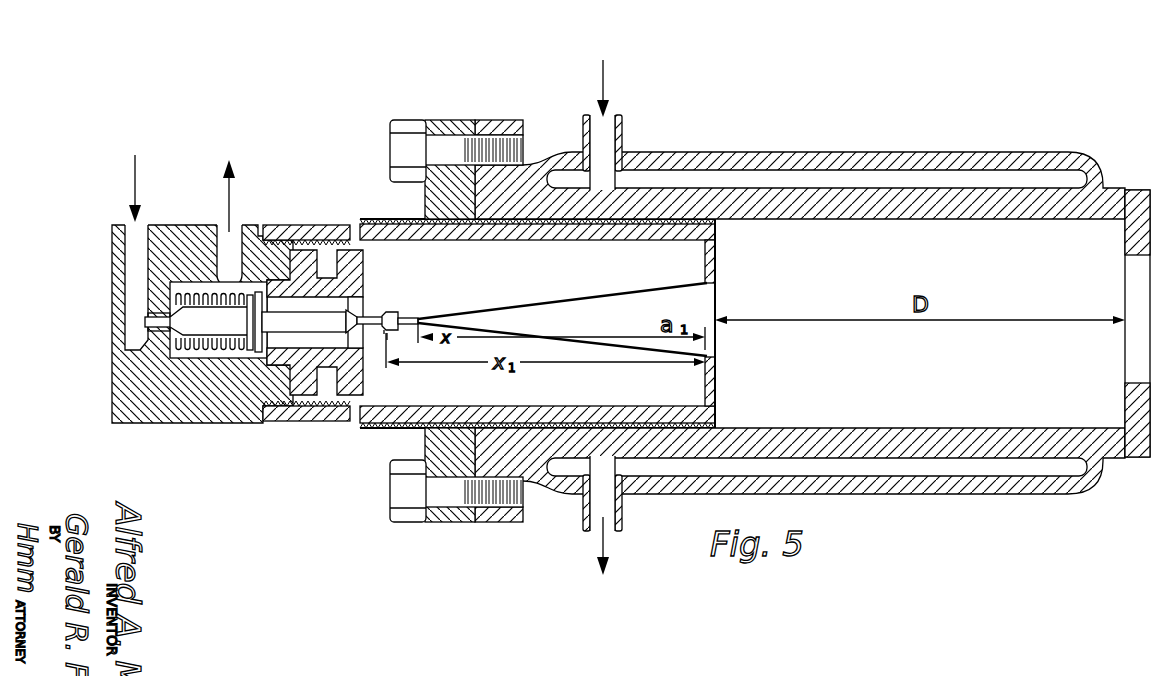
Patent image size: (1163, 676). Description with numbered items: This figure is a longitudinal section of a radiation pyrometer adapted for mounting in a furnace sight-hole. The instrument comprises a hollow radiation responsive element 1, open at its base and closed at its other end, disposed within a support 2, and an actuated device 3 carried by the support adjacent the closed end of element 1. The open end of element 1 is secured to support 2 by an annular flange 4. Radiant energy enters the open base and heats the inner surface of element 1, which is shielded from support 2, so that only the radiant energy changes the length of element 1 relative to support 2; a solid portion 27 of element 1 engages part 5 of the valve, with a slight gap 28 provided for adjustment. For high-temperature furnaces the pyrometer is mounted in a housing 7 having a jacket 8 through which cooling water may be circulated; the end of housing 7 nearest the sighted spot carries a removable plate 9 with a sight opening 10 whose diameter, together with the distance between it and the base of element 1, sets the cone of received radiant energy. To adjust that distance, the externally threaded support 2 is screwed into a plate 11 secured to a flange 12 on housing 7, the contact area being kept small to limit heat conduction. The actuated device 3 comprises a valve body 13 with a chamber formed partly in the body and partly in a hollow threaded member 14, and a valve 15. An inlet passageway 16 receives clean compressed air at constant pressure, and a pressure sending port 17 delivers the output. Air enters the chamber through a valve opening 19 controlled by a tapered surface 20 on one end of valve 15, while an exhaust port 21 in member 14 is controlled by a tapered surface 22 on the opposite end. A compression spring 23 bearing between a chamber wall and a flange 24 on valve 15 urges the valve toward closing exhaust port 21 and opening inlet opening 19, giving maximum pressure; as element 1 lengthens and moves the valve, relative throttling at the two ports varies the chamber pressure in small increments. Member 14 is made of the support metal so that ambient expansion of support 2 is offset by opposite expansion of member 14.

The radiation responsive element 1 is at (582, 297).
The support 2 is at (374, 222).
The actuated device 3 is at (205, 430).
The annular flange 4 is at (716, 388).
The part of the actuated device 5 is at (390, 312).
The housing 7 is at (708, 150).
The jacket 8 is at (885, 173).
The removable plate 9 is at (1134, 190).
The sight opening 10 is at (1128, 284).
The plate 11 is at (425, 446).
The flange 12 is at (513, 522).
The valve body 13 is at (200, 227).
The hollow threaded member 14 is at (322, 314).
The valve 15 is at (340, 306).
The inlet passageway 16 is at (132, 262).
The pressure sending port 17 is at (233, 229).
The valve opening 19 is at (148, 314).
The tapered surface 20 is at (158, 333).
The exhaust port 21 is at (372, 300).
The tapered surface 22 is at (388, 340).
The compression spring 23 is at (173, 330).
The flange 24 is at (257, 352).
The solid portion 27 is at (392, 331).
The gap 28 is at (398, 316).